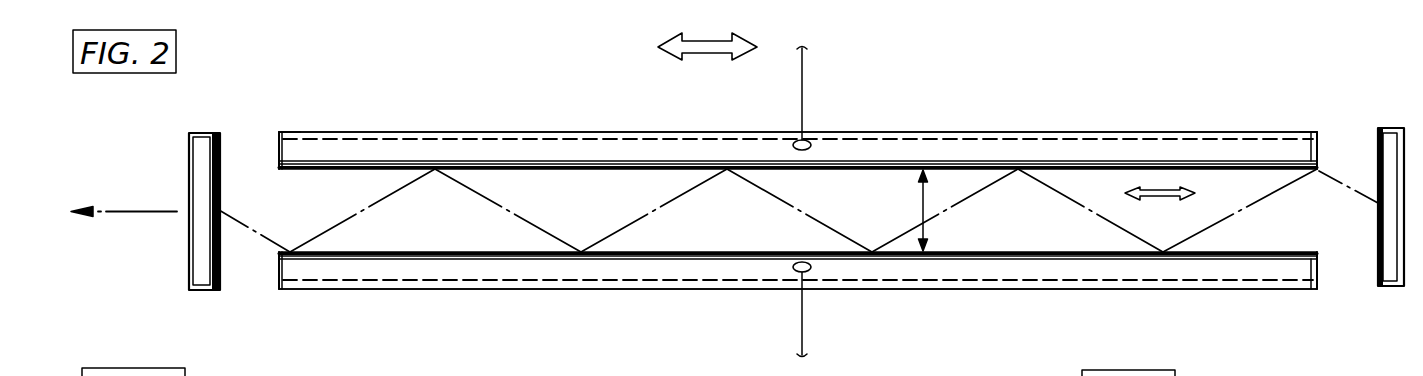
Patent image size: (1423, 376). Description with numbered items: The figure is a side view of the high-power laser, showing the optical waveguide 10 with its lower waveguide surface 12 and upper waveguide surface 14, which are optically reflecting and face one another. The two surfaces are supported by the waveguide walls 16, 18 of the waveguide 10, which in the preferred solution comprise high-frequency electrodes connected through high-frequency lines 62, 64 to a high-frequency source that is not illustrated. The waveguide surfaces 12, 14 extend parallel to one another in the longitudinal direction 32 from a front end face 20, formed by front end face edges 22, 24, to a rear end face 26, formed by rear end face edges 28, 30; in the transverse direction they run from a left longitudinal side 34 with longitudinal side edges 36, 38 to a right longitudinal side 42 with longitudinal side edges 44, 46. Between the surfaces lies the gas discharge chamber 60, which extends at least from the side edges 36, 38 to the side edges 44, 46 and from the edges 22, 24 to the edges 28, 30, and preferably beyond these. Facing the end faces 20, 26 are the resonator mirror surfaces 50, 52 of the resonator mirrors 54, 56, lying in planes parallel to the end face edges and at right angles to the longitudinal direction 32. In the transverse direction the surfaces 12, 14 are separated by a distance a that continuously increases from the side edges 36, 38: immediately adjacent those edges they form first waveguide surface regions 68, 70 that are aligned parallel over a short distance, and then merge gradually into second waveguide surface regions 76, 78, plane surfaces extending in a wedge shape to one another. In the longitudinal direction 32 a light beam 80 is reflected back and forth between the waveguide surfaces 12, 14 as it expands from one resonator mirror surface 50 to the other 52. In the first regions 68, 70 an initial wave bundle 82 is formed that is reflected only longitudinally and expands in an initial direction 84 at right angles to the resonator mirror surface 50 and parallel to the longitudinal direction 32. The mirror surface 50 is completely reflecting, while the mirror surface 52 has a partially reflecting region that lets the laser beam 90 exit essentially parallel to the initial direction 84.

The optical waveguide 10 is at (346, 121).
The lower waveguide surface 12 is at (372, 248).
The upper waveguide surface 14 is at (380, 180).
The waveguide wall 16 is at (408, 272).
The waveguide wall 18 is at (420, 152).
The front end face 20 is at (1332, 118).
The front end face edge 22 is at (1317, 265).
The front end face edge 24 is at (1318, 155).
The rear end face 26 is at (274, 126).
The rear end face edge 28 is at (279, 278).
The rear end face edge 30 is at (279, 155).
The longitudinal direction 32 is at (710, 55).
The left longitudinal side 34 is at (508, 160).
The longitudinal side edge 36 is at (507, 253).
The longitudinal side edge 38 is at (550, 165).
The right longitudinal side 42 is at (584, 292).
The longitudinal side edge 44 is at (612, 282).
The longitudinal side edge 46 is at (610, 131).
The resonator mirror surface 50 is at (1378, 252).
The resonator mirror surface 52 is at (220, 272).
The resonator mirror 54 is at (1392, 300).
The resonator mirror 56 is at (176, 263).
The gas discharge chamber 60 is at (720, 216).
The high-frequency line 62 is at (800, 300).
The high-frequency line 64 is at (801, 113).
The first waveguide surface region 68 is at (955, 247).
The first waveguide surface region 70 is at (962, 178).
The second waveguide surface region 76 is at (1007, 272).
The second waveguide surface region 78 is at (1018, 138).
The light beam 80 is at (1062, 193).
The initial wave bundle 82 is at (1083, 205).
The initial direction 84 is at (1163, 188).
The laser beam 90 is at (141, 211).
The distance a is at (915, 210).